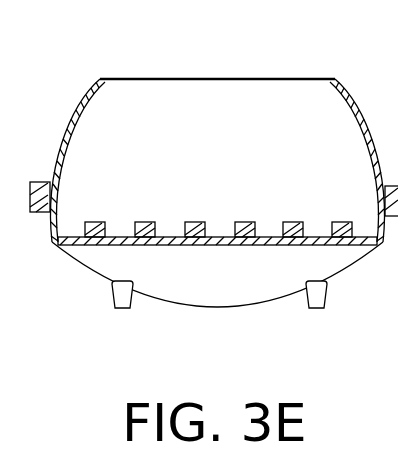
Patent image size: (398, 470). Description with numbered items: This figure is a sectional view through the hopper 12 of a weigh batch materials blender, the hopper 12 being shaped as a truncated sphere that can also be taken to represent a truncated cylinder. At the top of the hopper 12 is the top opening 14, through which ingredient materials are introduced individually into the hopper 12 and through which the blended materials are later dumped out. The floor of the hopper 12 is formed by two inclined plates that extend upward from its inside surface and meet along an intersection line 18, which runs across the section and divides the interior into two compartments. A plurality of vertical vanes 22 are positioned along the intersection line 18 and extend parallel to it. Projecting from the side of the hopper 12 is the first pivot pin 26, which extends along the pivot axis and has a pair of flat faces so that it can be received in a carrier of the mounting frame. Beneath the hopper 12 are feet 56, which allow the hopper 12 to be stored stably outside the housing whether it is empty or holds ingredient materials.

The hopper 12 is at (355, 99).
The top opening 14 is at (283, 80).
The intersection line 18 is at (223, 247).
The vertical vanes 22 is at (140, 222).
The first pivot pin 26 is at (30, 213).
The feet 56 is at (122, 309).